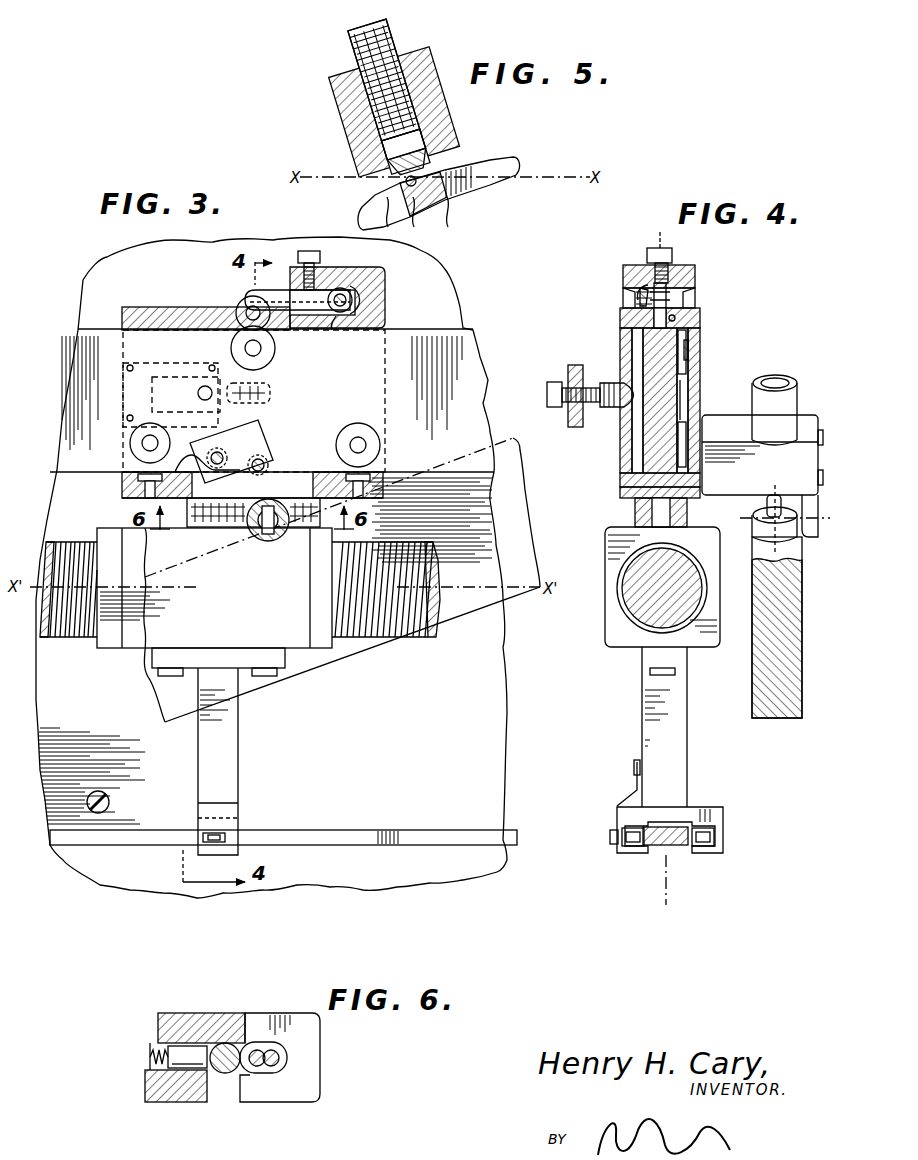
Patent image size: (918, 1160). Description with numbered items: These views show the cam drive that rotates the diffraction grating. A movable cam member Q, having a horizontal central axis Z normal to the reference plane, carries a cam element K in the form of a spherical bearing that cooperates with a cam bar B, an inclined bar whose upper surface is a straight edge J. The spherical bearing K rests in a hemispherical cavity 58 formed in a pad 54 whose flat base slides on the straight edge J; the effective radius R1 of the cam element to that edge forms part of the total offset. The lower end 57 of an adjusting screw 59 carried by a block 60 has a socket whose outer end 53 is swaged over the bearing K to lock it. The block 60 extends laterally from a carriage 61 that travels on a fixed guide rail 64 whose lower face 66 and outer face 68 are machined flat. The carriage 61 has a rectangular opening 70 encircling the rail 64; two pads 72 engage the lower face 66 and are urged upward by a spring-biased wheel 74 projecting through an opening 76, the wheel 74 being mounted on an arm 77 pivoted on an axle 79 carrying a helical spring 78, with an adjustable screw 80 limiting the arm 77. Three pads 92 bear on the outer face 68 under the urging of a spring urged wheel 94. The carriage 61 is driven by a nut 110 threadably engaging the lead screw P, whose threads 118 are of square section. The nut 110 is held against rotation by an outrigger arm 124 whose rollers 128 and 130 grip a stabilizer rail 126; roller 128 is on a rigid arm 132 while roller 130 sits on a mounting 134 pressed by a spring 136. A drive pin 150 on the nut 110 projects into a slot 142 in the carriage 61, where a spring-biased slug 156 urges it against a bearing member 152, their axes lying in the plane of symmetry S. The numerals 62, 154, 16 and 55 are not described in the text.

In FIG. 3, the cam member Q is at (158, 305).
In FIG. 4, the cam member Q is at (600, 364).
In FIG. 3, the spring-biased wheel 74 is at (245, 302).
In FIG. 4, the spring-biased wheel 74 is at (698, 294).
In FIG. 3, the opening 76 is at (228, 308).
In FIG. 4, the opening 76 is at (700, 312).
In FIG. 3, the arm 77 is at (297, 290).
In FIG. 4, the arm 77 is at (650, 284).
In FIG. 3, the helical spring 78 is at (352, 296).
In FIG. 4, the helical spring 78 is at (634, 296).
In FIG. 3, the axle 79 is at (358, 306).
In FIG. 4, the axle 79 is at (668, 300).
In FIG. 3, the adjustable screw 80 is at (320, 255).
In FIG. 4, the adjustable screw 80 is at (674, 258).
In FIG. 3, the carriage 61 is at (385, 325).
In FIG. 4, the carriage 61 is at (704, 378).
In FIG. 4, the cover plate 62 is at (704, 332).
In FIG. 3, the guide rail 64 is at (440, 388).
In FIG. 4, the guide rail 64 is at (648, 440).
In FIG. 3, the lower face 66 is at (222, 451).
In FIG. 3, the outer face 68 is at (300, 472).
In FIG. 4, the outer face 68 is at (678, 400).
In FIG. 4, the rectangular opening 70 is at (620, 350).
In FIG. 3, the pads 72 is at (136, 474).
In FIG. 4, the pads 72 is at (620, 490).
In FIG. 3, the pads 92 is at (128, 443).
In FIG. 4, the pads 92 is at (690, 342).
In FIG. 3, the spring urged wheel 94 is at (268, 395).
In FIG. 4, the spring urged wheel 94 is at (606, 408).
In FIG. 3, the straight edge J is at (525, 420).
In FIG. 3, the lead screw P is at (420, 572).
In FIG. 4, the lead screw P is at (635, 604).
In FIG. 3, the nut 110 is at (300, 650).
In FIG. 4, the nut 110 is at (618, 640).
In FIG. 3, the threads 118 is at (418, 638).
In FIG. 3, the outrigger arm 124 is at (230, 774).
In FIG. 4, the outrigger arm 124 is at (664, 733).
In FIG. 3, the stabilizer rail 126 is at (412, 836).
In FIG. 4, the stabilizer rail 126 is at (658, 846).
In FIG. 3, the roller 128 is at (226, 836).
In FIG. 4, the roller 128 is at (702, 842).
In FIG. 4, the roller 130 is at (635, 848).
In FIG. 3, the arm 132 is at (238, 812).
In FIG. 4, the arm 132 is at (722, 810).
In FIG. 4, the mounting 134 is at (620, 850).
In FIG. 4, the spring 136 is at (628, 790).
In FIG. 3, the drive pin 150 is at (258, 540).
In FIG. 4, the drive pin 150 is at (650, 512).
In FIG. 6, the drive pin 150 is at (228, 1043).
In FIG. 3, the bearing member 152 is at (287, 560).
In FIG. 6, the bearing member 152 is at (270, 1075).
In FIG. 3, the rack / spring 154 is at (205, 528).
In FIG. 6, the rack / spring 154 is at (150, 1058).
In FIG. 6, the spring-biased slug 156 is at (185, 1048).
In FIG. 6, the slot 142 is at (258, 1040).
In FIG. 3, the frame plate 16 is at (480, 758).
In FIG. 4, the plane of symmetry S is at (661, 580).
In FIG. 4, the horizontal central axis Z is at (783, 518).
In FIG. 5, the cam element K is at (380, 192).
In FIG. 4, the cam element K is at (768, 520).
In FIG. 5, the cam bar B is at (457, 210).
In FIG. 4, the cam bar B is at (788, 560).
In FIG. 5, the pad 54 is at (445, 180).
In FIG. 4, the pad 54 is at (790, 545).
In FIG. 5, the block 60 is at (333, 96).
In FIG. 4, the block 60 is at (731, 428).
In FIG. 5, the adjusting screw 59 is at (396, 56).
In FIG. 5, the lower end 57 is at (392, 140).
In FIG. 5, the outer end 53 is at (450, 128).
In FIG. 5, the hemispherical cavity 58 is at (416, 180).
In FIG. 5, the blade end 55 is at (445, 228).
In FIG. 5, the effective radius R1 is at (365, 210).